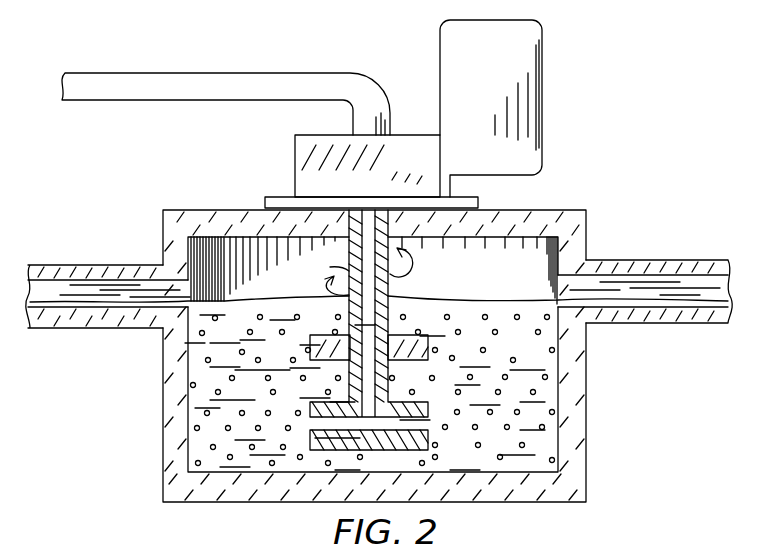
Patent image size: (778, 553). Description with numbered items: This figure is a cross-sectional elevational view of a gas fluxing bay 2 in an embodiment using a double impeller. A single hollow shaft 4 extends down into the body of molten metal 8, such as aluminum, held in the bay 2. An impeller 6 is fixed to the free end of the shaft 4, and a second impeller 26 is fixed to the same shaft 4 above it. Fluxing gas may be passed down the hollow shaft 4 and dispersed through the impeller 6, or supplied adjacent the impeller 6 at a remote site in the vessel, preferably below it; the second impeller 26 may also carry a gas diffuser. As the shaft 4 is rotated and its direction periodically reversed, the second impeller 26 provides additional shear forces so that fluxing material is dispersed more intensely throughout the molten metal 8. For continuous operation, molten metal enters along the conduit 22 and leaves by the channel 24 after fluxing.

The gas fluxing bay 2 is at (614, 406).
The hollow shaft 4 is at (388, 272).
The impeller 6 is at (417, 450).
The body of molten metal 8 is at (188, 376).
The conduit 22 is at (53, 263).
The channel 24 is at (678, 260).
The second impeller 26 is at (430, 346).